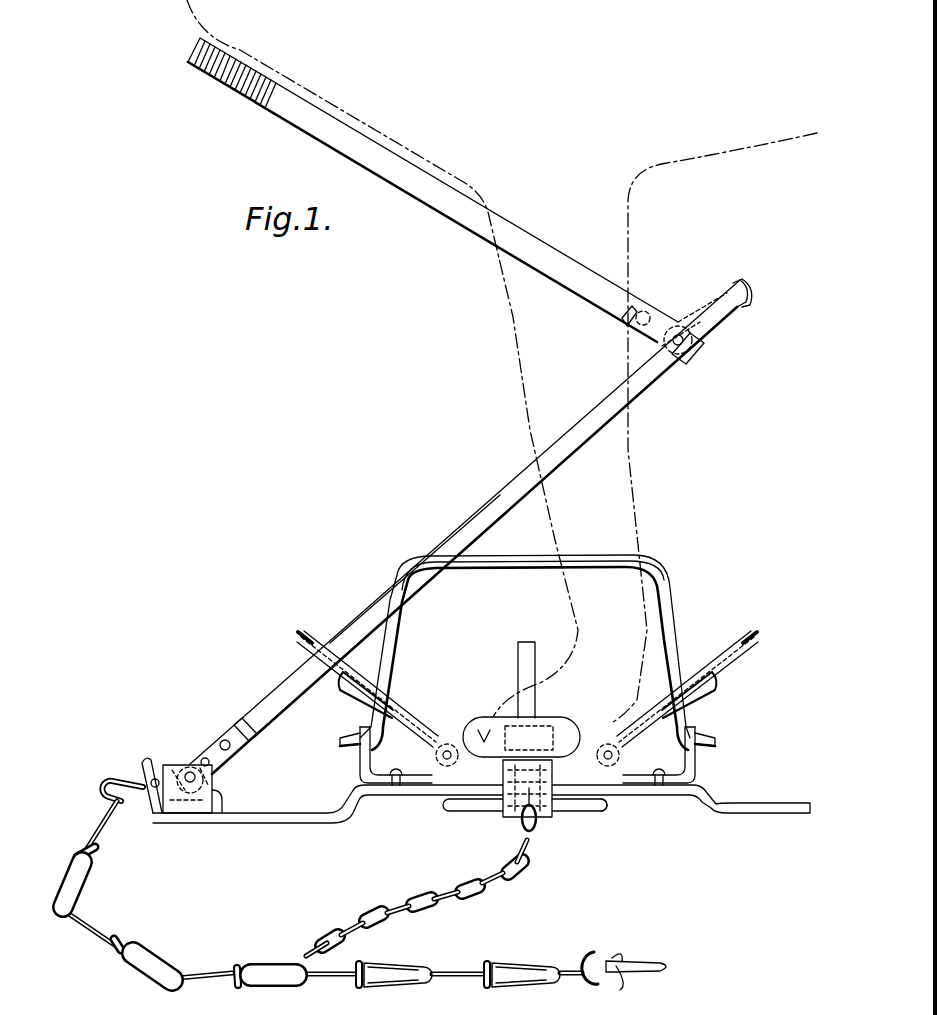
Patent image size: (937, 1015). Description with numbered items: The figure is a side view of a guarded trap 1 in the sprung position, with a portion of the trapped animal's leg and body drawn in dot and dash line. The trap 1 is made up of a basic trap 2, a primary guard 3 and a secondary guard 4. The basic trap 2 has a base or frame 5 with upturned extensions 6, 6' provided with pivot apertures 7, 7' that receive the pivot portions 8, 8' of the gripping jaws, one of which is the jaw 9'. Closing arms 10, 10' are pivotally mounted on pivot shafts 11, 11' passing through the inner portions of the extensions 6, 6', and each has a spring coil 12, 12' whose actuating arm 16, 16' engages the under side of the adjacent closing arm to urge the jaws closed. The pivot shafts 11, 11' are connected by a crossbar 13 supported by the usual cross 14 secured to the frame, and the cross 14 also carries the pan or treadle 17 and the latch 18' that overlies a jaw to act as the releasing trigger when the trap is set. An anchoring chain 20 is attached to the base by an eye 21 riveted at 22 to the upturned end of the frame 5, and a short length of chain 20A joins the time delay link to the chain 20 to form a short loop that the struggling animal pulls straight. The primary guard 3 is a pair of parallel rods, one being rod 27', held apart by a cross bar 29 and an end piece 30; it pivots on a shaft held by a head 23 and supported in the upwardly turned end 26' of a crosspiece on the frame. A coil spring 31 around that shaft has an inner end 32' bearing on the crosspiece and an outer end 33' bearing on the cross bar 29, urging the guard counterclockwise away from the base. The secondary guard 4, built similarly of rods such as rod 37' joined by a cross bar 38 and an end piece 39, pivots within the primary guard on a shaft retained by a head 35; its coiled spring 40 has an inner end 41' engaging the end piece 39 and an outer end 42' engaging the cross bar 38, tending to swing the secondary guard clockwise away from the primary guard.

The trap 1 is at (398, 574).
The basic trap 2 is at (696, 708).
The primary guard 3 is at (472, 519).
The secondary guard 4 is at (452, 207).
The base or frame 5 is at (305, 820).
The upturned extension 6 is at (383, 755).
The upturned extension 6' is at (671, 755).
The pivot aperture 7 is at (356, 720).
The pivot aperture 7' is at (702, 718).
The pivot portion 8 is at (339, 738).
The pivot portion 8' is at (716, 735).
The gripping jaw 9' is at (528, 652).
The closing arm 10 is at (367, 689).
The closing arm 10' is at (694, 689).
The pivot shaft 11 is at (430, 753).
The pivot shaft 11' is at (626, 753).
The spring coil 12 is at (510, 801).
The spring coil 12' is at (624, 799).
The crossbar 13 is at (493, 806).
The cross 14 is at (541, 826).
The actuating arm 16 is at (379, 709).
The actuating arm 16' is at (674, 703).
The pan or treadle 17 is at (571, 718).
The latch 18' is at (542, 680).
The chain 20 is at (105, 946).
The short length of chain 20A is at (490, 900).
The eye 21 is at (122, 806).
The rivet 22 is at (170, 760).
The head 23 is at (200, 777).
The upwardly turned end 26' is at (191, 742).
The rod 27' is at (416, 547).
The cross bar 29 is at (230, 738).
The end piece 30 is at (718, 286).
The coil spring 31 is at (183, 756).
The inner end 32' is at (231, 801).
The outer end 33' is at (259, 739).
The head 35 is at (677, 361).
The rod 37' is at (382, 358).
The cross bar 38 is at (630, 323).
The end piece 39 is at (192, 50).
The coiled spring 40 is at (688, 360).
The inner end 41' is at (755, 292).
The outer end 42' is at (611, 323).